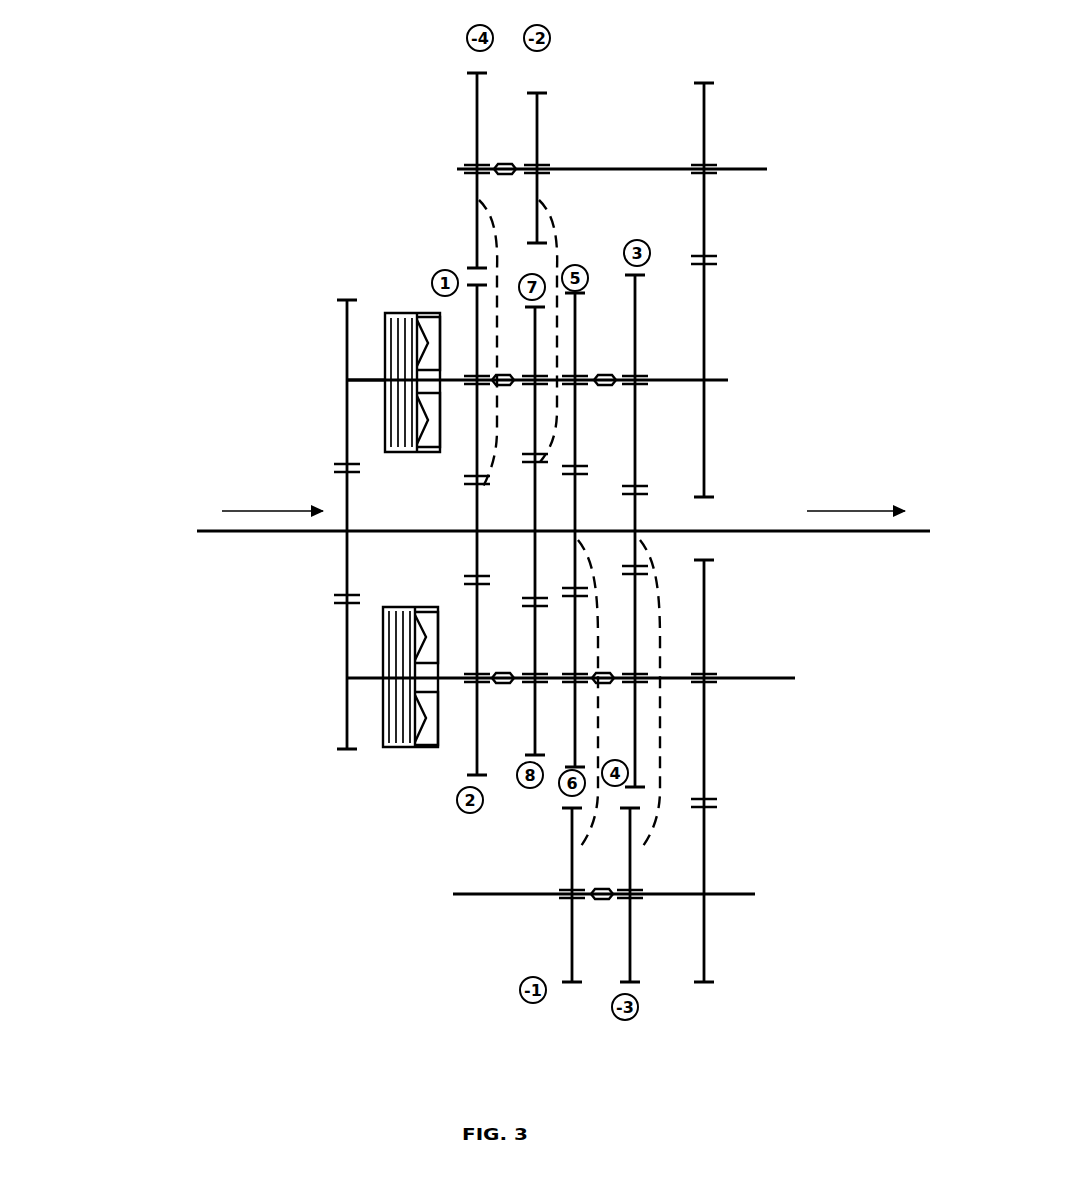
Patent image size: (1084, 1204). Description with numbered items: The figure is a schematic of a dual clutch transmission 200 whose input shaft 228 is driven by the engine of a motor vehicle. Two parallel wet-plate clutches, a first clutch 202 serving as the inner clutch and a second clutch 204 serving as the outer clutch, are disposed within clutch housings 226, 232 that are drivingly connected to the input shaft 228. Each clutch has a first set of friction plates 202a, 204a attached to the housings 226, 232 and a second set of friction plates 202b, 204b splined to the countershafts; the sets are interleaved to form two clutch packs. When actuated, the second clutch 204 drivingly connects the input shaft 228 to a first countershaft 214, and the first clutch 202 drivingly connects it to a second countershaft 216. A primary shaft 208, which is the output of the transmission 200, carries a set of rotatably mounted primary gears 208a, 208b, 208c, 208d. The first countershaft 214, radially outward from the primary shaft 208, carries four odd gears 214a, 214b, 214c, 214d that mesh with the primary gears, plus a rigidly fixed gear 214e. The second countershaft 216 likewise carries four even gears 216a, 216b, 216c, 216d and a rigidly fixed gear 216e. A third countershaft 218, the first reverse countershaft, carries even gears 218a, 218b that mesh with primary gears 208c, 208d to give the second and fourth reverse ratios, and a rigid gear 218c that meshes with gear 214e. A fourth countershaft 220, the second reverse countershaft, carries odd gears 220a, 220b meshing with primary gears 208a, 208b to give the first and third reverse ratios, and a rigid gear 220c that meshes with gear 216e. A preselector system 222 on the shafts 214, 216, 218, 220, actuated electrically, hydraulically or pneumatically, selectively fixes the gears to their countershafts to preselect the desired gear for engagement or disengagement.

The dual clutch transmission 200 is at (128, 68).
The first clutch 202 is at (394, 686).
The friction plates 202a is at (412, 744).
The friction plates 202b is at (410, 606).
The second clutch 204 is at (376, 341).
The friction plates 204a is at (418, 311).
The friction plates 204b is at (414, 452).
The primary shaft 208 is at (653, 526).
The primary gear 208a is at (640, 435).
The primary gear 208b is at (580, 470).
The primary gear 208c is at (530, 456).
The primary gear 208d is at (472, 477).
The first countershaft 214 is at (552, 379).
The odd gear 214a is at (640, 318).
The odd gear 214b is at (583, 313).
The odd gear 214c is at (528, 356).
The odd gear 214d is at (469, 346).
The rigidly fixed gear 214e is at (710, 312).
The second countershaft 216 is at (585, 677).
The even gear 216a is at (638, 618).
The even gear 216b is at (583, 628).
The even gear 216c is at (538, 620).
The even gear 216d is at (482, 645).
The rigidly fixed gear 216e is at (708, 612).
The third countershaft 218 is at (632, 167).
The even gear 218a is at (541, 136).
The even gear 218b is at (463, 118).
The rigidly fixed gear 218c is at (710, 138).
The fourth countershaft 220 is at (617, 893).
The odd gear 220a is at (566, 888).
The odd gear 220b is at (632, 888).
The rigidly fixed gear 220c is at (708, 860).
The preselector system 222 is at (505, 160).
The clutch housing 226 is at (382, 732).
The input shaft 228 is at (255, 526).
The clutch housing 232 is at (382, 316).